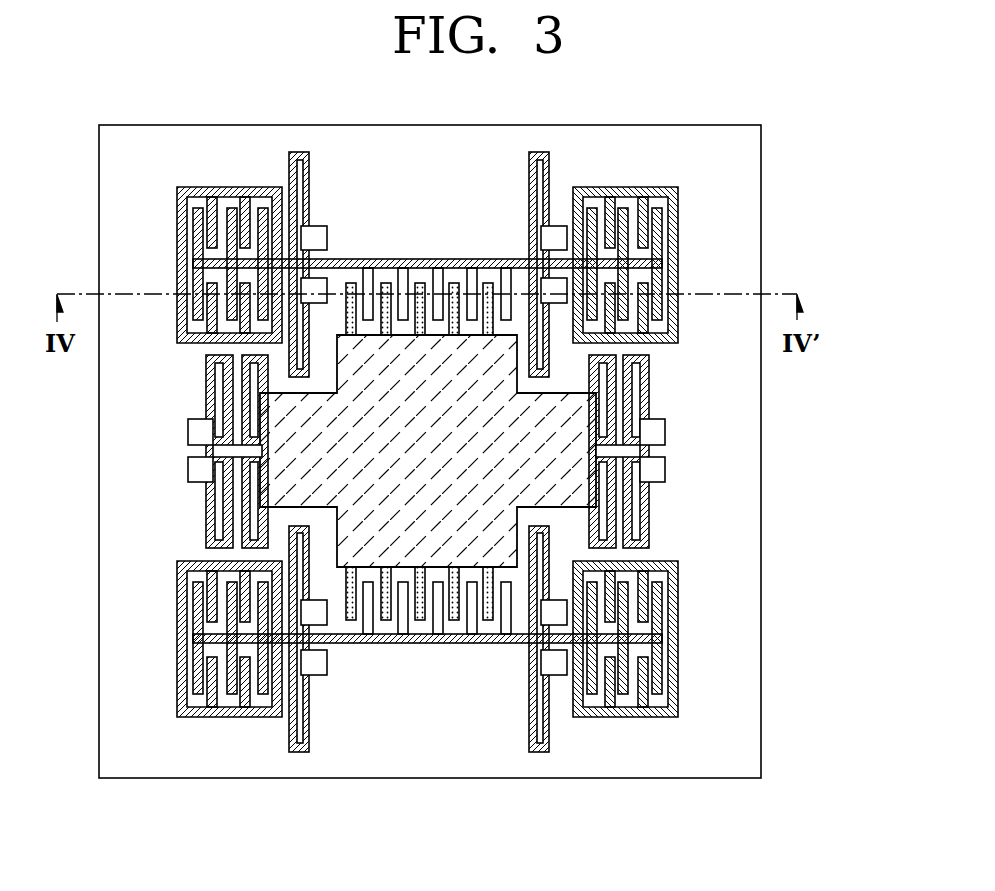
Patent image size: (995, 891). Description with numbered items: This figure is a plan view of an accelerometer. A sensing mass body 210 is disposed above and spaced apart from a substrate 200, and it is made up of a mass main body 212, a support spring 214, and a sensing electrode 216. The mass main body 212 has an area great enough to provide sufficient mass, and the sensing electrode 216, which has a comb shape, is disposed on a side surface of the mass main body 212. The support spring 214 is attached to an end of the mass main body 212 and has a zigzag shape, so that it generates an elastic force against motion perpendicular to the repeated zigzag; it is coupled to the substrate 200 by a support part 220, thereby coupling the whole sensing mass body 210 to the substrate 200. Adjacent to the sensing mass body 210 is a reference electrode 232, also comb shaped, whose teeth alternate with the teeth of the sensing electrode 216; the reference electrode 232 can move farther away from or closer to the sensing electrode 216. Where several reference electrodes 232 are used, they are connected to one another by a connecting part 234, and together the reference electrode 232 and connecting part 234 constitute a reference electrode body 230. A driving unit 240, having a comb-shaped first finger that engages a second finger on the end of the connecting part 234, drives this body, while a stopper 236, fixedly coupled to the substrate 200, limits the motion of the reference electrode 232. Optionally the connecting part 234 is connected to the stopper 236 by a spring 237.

The substrate 200 is at (750, 723).
The sensing mass body 210 is at (556, 451).
The mass main body 212 is at (582, 425).
The support spring 214 is at (648, 383).
The sensing electrode 216 is at (490, 322).
The support part 220 is at (662, 468).
The reference electrode body 230 is at (427, 554).
The reference electrode 232 is at (436, 636).
The connecting part 234 is at (494, 643).
The stopper 236 is at (557, 676).
The spring 237 is at (293, 755).
The driving unit 240 is at (678, 650).